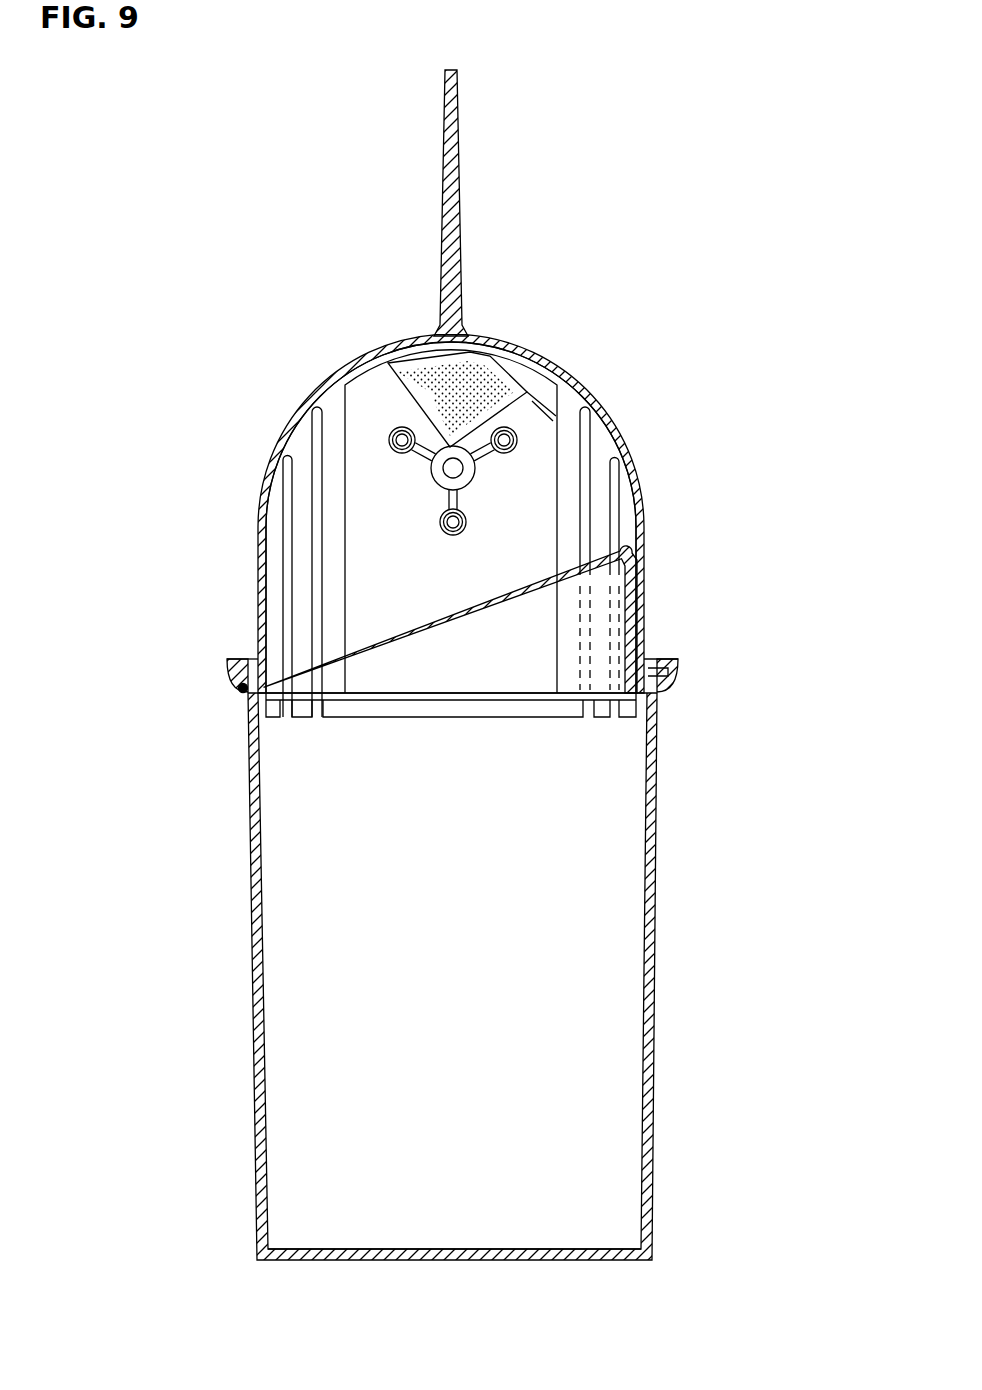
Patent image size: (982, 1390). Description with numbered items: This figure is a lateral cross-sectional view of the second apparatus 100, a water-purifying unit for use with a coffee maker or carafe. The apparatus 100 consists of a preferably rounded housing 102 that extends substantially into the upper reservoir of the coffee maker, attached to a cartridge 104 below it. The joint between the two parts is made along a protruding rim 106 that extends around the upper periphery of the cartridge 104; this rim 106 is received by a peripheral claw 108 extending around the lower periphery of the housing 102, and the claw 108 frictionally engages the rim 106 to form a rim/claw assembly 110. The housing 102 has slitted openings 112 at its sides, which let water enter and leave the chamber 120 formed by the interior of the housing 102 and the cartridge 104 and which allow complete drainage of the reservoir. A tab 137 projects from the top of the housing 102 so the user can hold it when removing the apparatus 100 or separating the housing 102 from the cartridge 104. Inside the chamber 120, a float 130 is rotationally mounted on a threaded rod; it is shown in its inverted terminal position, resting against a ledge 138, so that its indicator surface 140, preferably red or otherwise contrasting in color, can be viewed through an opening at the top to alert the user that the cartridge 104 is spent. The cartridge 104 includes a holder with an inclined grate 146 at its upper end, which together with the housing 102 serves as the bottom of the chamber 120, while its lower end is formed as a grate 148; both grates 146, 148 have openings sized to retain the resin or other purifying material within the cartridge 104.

The second apparatus 100 is at (240, 595).
The housing 102 is at (527, 355).
The cartridge 104 is at (492, 918).
The protruding rim 106 is at (240, 689).
The peripheral claw 108 is at (227, 660).
The rim/claw assembly 110 is at (692, 673).
The slitted openings 112 is at (320, 570).
The chamber 120 is at (412, 514).
The float 130 is at (385, 387).
The tab 137 is at (458, 122).
The ledge 138 is at (508, 457).
The indicator surface 140 is at (543, 390).
The inclined grate 146 is at (457, 617).
The grate 148 is at (438, 1252).